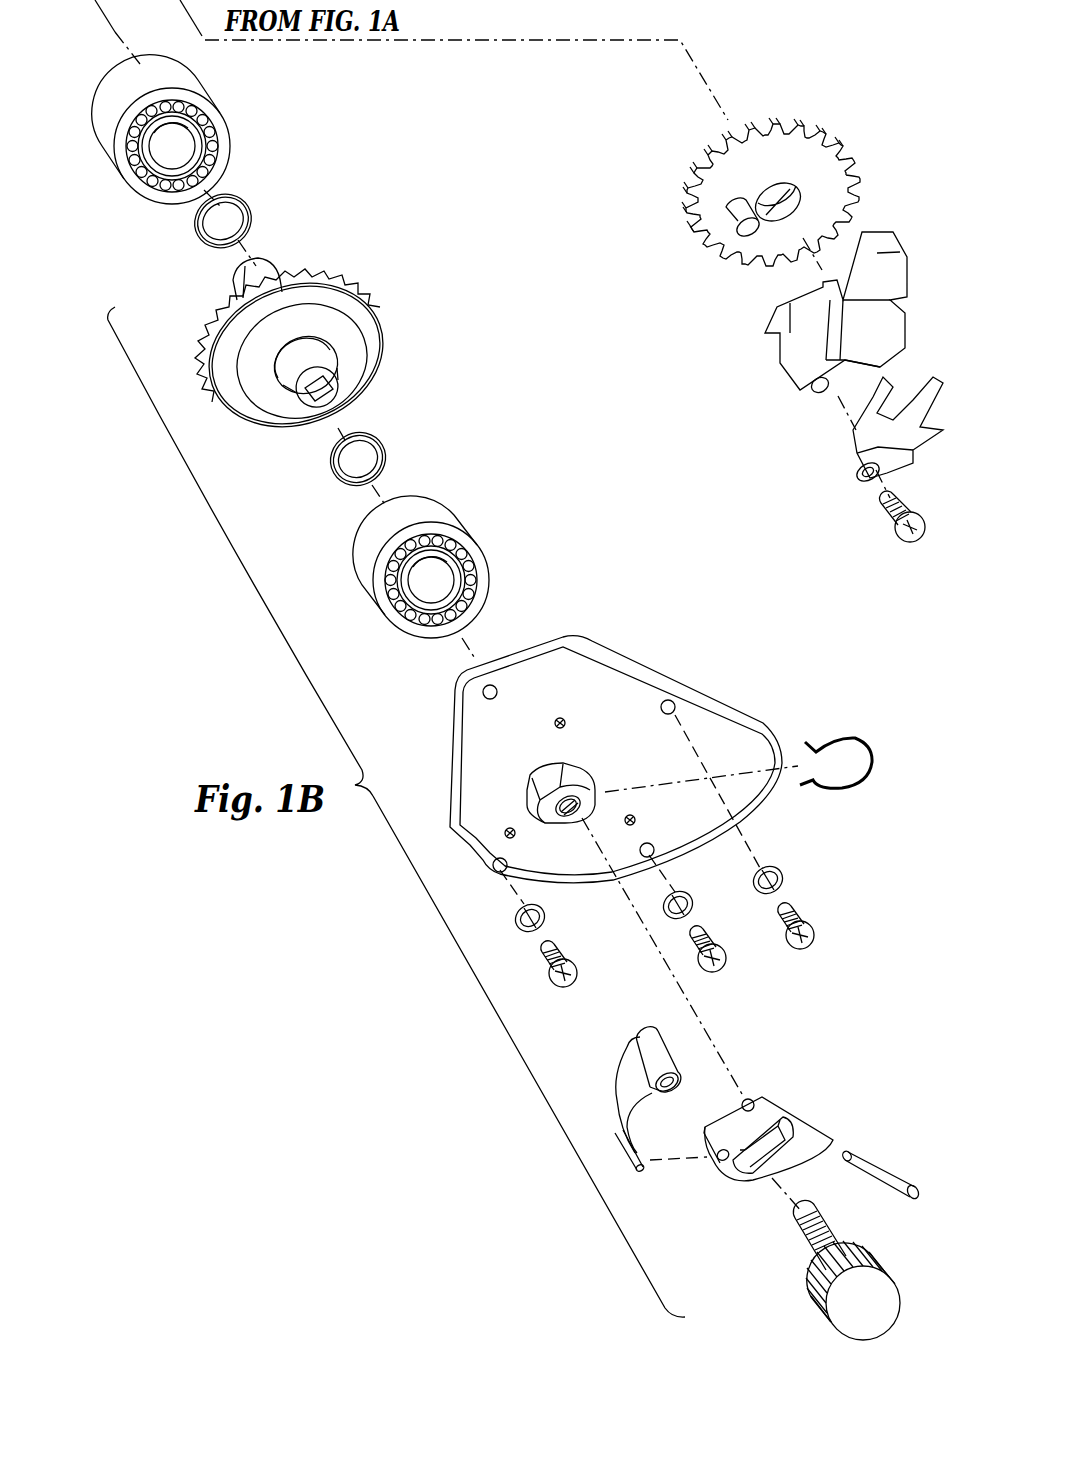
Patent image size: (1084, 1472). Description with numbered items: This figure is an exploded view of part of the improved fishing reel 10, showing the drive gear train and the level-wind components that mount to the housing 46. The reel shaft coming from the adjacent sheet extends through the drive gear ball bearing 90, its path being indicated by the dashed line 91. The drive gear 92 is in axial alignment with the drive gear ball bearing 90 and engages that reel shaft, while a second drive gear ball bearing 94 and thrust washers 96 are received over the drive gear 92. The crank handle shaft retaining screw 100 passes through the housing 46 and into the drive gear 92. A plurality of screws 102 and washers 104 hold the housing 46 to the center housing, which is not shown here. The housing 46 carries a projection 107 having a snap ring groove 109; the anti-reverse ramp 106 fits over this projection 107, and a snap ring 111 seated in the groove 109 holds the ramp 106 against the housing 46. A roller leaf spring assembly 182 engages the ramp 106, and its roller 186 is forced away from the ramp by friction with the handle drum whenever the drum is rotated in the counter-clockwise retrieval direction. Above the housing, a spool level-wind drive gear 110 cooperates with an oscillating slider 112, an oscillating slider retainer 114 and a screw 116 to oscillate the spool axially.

The reel 10 is at (413, 960).
The housing 46 is at (604, 688).
The drive gear ball bearing 90 is at (218, 158).
The dashed line 91 is at (115, 33).
The drive gear 92 is at (378, 356).
The drive gear ball bearing 94 is at (470, 518).
The thrust washers 96 is at (254, 226).
The crank handle shaft retaining screw 100 is at (860, 1302).
The screws 102 is at (569, 987).
The washers 104 is at (516, 911).
The anti-reverse ramp 106 is at (793, 1110).
The projection 107 is at (573, 773).
The snap ring groove 109 is at (580, 772).
The spool level-wind drive gear 110 is at (755, 175).
The snap ring 111 is at (855, 736).
The oscillating slider 112 is at (870, 272).
The oscillating slider retainer 114 is at (880, 432).
The screw 116 is at (896, 526).
The roller leaf spring assembly 182 is at (619, 1066).
The roller 186 is at (654, 1048).